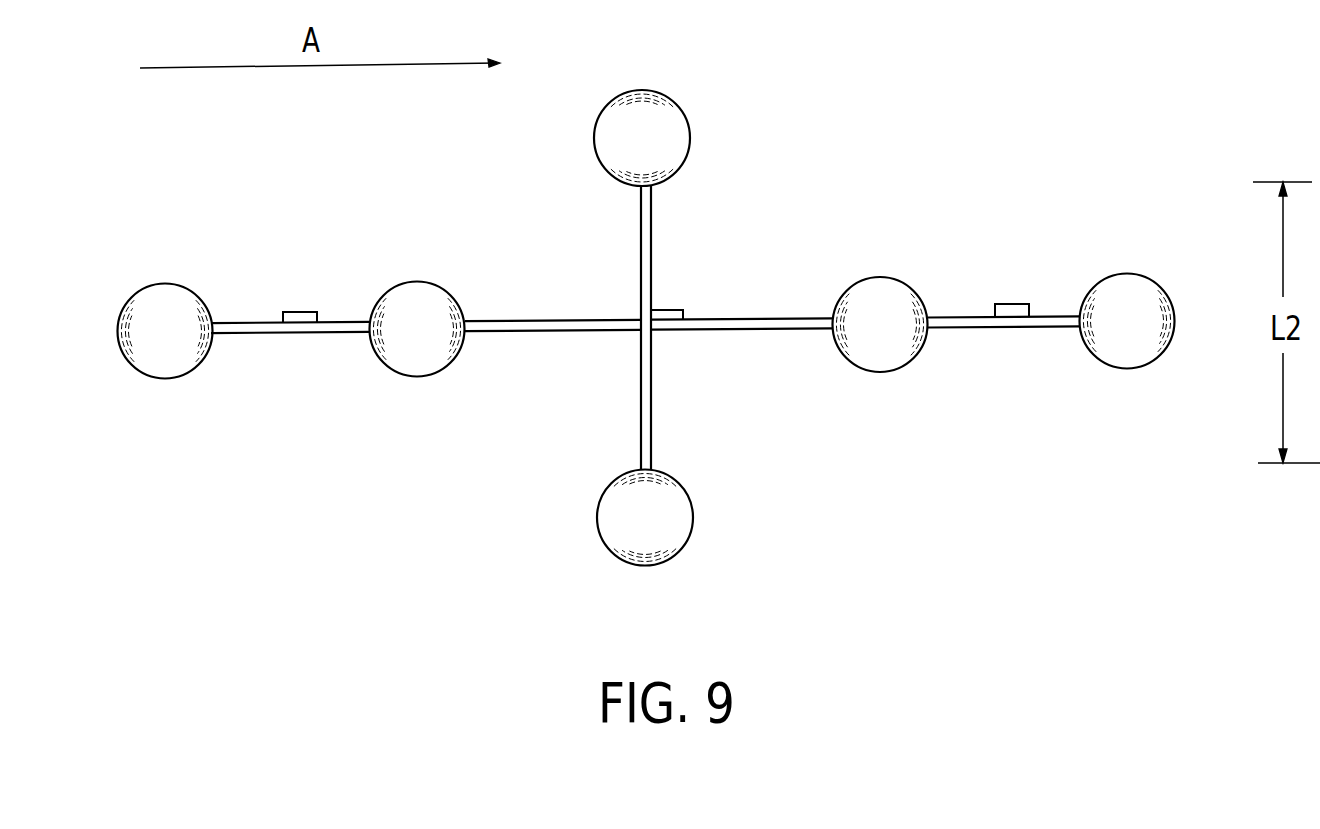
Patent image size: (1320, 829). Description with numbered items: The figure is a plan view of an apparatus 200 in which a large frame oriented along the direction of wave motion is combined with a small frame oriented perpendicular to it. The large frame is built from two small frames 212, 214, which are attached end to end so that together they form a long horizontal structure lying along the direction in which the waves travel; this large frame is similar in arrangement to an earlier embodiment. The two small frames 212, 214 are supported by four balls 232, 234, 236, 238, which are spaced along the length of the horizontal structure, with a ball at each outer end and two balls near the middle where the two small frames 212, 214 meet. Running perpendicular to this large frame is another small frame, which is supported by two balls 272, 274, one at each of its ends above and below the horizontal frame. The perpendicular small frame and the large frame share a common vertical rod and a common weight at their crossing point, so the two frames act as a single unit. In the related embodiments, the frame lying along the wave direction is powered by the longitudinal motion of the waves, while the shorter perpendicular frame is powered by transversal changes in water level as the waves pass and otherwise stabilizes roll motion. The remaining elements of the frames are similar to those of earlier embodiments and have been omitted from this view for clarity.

The apparatus 200 is at (477, 194).
The small frame 212 is at (333, 329).
The small frame 214 is at (1037, 323).
The ball 232 is at (168, 354).
The ball 234 is at (418, 363).
The ball 236 is at (870, 297).
The ball 238 is at (1117, 293).
The ball 272 is at (672, 140).
The ball 274 is at (663, 523).